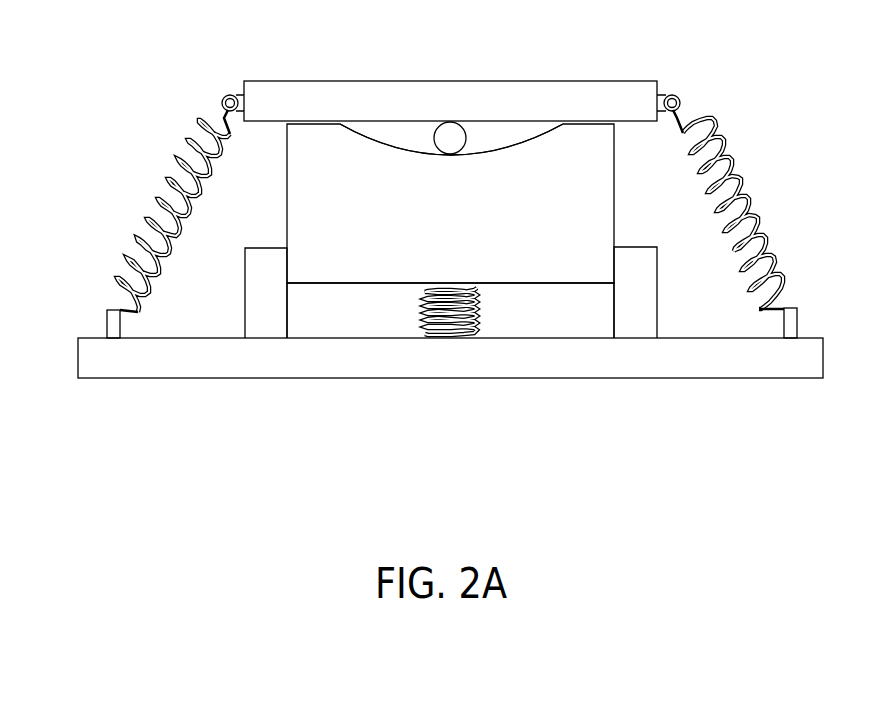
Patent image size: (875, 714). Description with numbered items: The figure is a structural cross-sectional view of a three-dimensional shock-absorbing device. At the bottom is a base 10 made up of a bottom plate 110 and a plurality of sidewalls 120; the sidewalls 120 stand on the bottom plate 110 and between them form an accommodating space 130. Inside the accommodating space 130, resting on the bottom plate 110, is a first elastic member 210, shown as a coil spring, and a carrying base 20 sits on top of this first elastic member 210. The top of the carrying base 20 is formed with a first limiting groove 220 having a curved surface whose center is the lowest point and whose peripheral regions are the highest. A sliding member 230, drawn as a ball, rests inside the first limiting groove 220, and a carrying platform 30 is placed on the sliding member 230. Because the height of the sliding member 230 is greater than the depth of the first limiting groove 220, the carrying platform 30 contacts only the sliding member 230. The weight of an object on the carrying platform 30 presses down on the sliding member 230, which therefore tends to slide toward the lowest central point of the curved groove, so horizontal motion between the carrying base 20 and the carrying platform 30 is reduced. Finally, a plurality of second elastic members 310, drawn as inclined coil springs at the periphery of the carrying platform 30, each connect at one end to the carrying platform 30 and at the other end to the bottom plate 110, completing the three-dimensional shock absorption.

The base 10 is at (208, 425).
The bottom plate 110 is at (468, 362).
The sidewalls 120 is at (255, 305).
The accommodating space 130 is at (375, 318).
The carrying base 20 is at (437, 222).
The first elastic member 210 is at (478, 305).
The first limiting groove 220 is at (411, 155).
The sliding member 230 is at (452, 130).
The carrying platform 30 is at (514, 95).
The second elastic members 310 is at (152, 202).